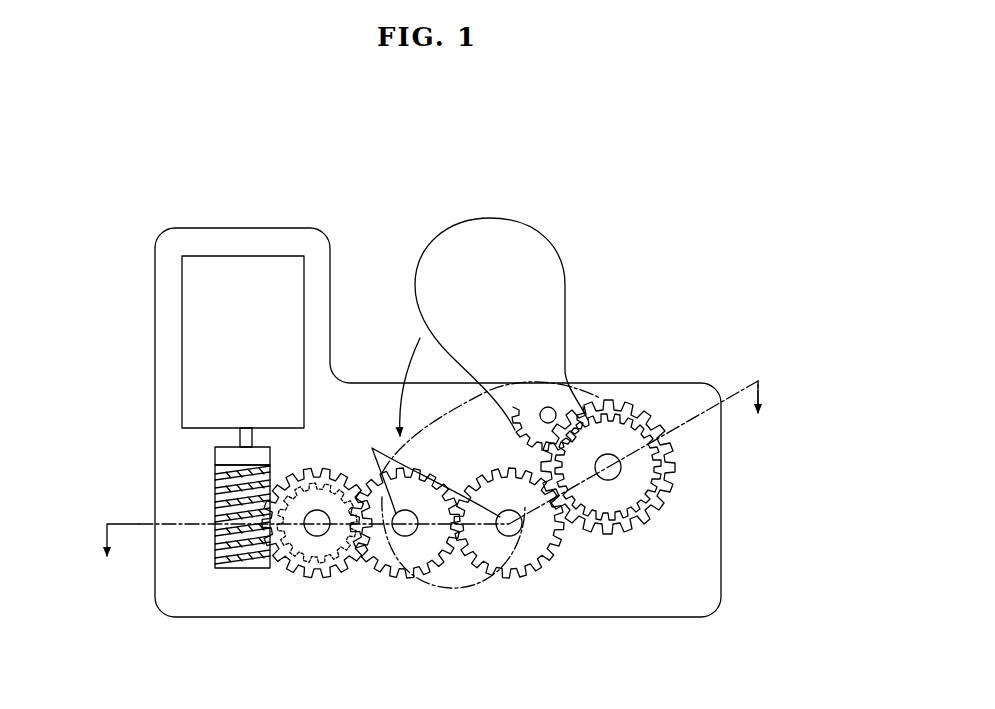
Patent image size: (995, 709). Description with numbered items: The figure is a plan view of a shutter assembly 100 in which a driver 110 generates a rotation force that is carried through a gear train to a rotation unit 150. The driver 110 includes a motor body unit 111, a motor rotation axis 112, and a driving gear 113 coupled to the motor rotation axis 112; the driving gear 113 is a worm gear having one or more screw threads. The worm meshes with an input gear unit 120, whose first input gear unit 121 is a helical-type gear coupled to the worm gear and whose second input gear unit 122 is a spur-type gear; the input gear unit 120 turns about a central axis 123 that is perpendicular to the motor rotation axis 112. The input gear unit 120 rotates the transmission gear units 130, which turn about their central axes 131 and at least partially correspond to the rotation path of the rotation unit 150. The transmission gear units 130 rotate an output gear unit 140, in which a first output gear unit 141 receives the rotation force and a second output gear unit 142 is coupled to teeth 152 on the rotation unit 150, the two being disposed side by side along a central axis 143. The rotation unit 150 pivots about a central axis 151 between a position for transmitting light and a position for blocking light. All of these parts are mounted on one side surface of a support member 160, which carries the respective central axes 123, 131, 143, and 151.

The shutter assembly 100 is at (597, 233).
The driver 110 is at (113, 377).
The motor body unit 111 is at (190, 379).
The motor rotation axis 112 is at (238, 436).
The driving gear 113 is at (215, 497).
The input gear unit 120 is at (240, 648).
The first input gear unit 121 is at (286, 570).
The second input gear unit 122 is at (312, 560).
The central axis of the input gear unit 123 is at (320, 536).
The transmission gear units 130 is at (413, 578).
The central axes of the transmission gear units 131 is at (427, 472).
The output gear unit 140 is at (655, 648).
The first output gear unit 141 is at (600, 527).
The second output gear unit 142 is at (620, 515).
The central axis of the output gear unit 143 is at (618, 475).
The rotation unit 150 is at (560, 288).
The central axis of the rotation unit 151 is at (550, 408).
The teeth 152 is at (625, 420).
The support member 160 is at (283, 228).